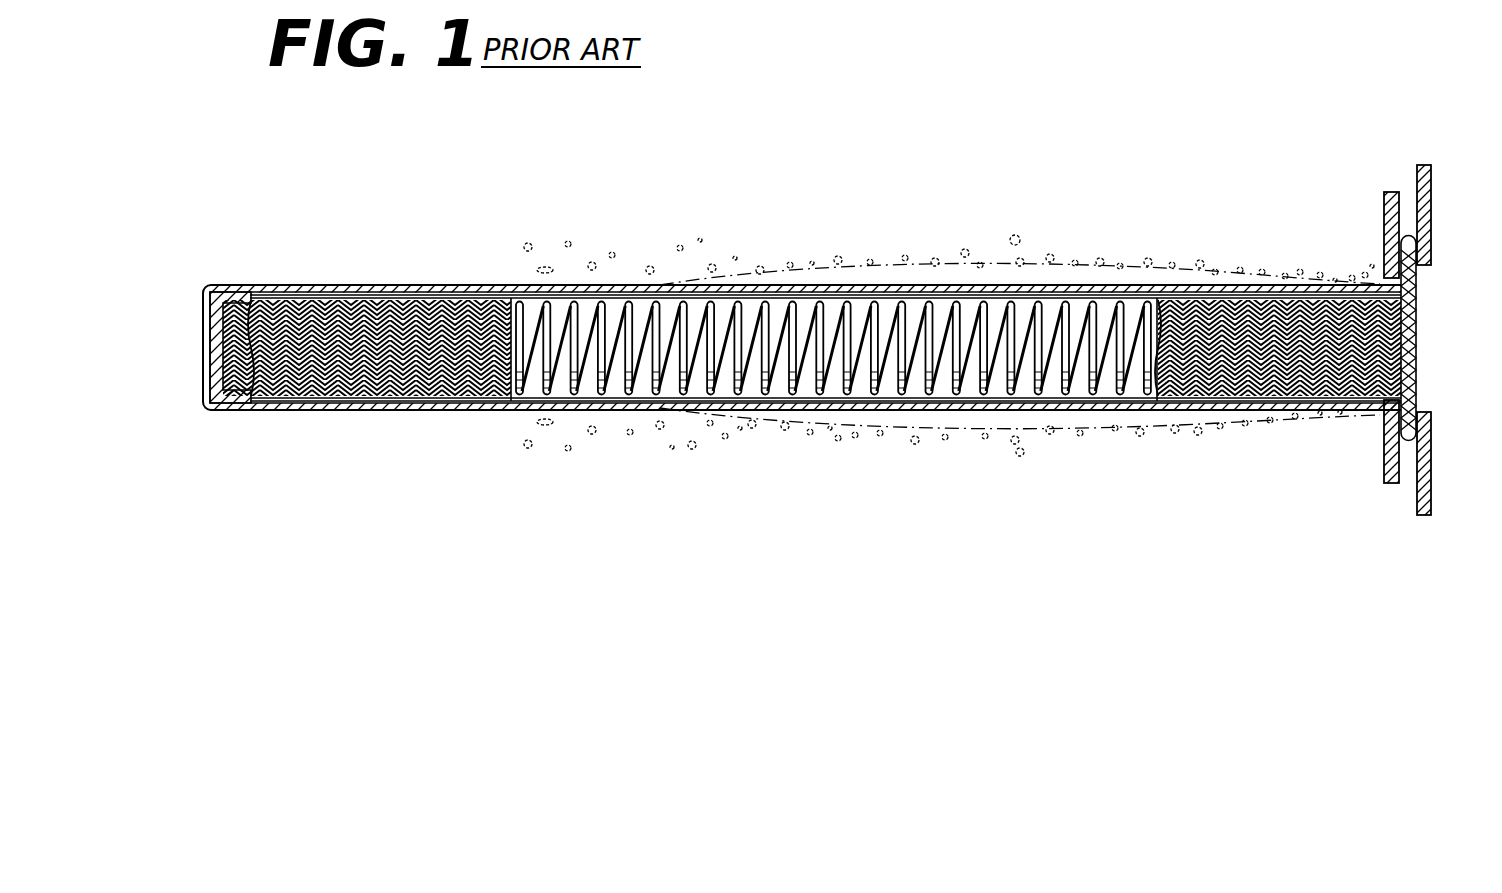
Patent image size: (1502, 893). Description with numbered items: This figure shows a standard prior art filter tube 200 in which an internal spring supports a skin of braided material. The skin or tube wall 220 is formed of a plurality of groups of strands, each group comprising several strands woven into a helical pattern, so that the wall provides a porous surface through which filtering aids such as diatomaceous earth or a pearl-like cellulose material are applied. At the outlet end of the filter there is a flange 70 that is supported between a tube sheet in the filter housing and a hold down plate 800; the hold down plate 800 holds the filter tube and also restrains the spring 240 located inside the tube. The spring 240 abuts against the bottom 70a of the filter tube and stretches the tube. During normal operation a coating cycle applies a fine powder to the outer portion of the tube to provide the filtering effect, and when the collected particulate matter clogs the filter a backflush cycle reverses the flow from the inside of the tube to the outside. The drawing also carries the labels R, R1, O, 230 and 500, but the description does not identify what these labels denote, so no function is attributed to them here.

The bottom of the filter tube 70a is at (203, 330).
The skin or tube wall 220 is at (608, 290).
The spring 240 is at (985, 399).
The braided heat-resistant material R is at (402, 409).
The oxidation / gas in braid O is at (1288, 315).
The coil spring 230 is at (858, 396).
The filter tube 200 is at (850, 242).
The escaping gas bubbles R1 is at (753, 428).
The inner wall plate 500 is at (1390, 215).
The hold down plate 800 is at (1418, 175).
The flange 70 is at (1415, 405).